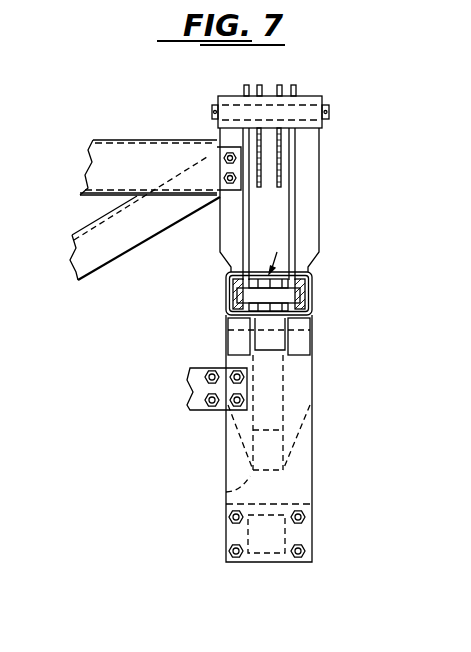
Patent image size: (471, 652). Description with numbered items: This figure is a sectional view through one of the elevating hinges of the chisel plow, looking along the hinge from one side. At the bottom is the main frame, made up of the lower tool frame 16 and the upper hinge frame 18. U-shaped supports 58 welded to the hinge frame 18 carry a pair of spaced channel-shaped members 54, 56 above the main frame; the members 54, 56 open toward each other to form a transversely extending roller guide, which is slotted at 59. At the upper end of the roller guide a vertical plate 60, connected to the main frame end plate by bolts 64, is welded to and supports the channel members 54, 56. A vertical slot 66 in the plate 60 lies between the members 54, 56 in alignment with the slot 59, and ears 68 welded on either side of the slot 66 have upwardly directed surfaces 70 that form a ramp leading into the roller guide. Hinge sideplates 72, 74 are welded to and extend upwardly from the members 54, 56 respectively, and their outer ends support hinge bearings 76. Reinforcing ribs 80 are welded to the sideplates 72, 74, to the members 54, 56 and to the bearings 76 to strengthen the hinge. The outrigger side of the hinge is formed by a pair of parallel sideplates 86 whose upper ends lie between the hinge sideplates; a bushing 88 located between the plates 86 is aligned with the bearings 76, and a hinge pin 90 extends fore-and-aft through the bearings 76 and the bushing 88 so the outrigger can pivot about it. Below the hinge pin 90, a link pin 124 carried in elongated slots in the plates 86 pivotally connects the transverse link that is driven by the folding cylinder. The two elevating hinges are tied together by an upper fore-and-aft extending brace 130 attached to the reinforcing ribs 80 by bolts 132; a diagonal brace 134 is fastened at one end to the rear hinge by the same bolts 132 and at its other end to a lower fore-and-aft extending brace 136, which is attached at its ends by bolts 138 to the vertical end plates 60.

The lower tool frame 16 is at (258, 564).
The upper hinge frame 18 is at (226, 491).
The channel-shaped member 54 is at (312, 273).
The channel-shaped member 56 is at (226, 277).
The U-shaped support 58 is at (228, 440).
The slot 59 is at (280, 254).
The vertical plate 60 is at (295, 478).
The bolt 64 is at (229, 550).
The vertical slot 66 is at (272, 341).
The ear 68 is at (243, 351).
The upwardly directed surface 70 is at (240, 326).
The hinge sideplate 72 is at (296, 226).
The hinge sideplate 74 is at (244, 236).
The hinge bearing 76 is at (230, 96).
The reinforcing rib 80 is at (306, 188).
The sideplate 86 is at (259, 163).
The bushing 88 is at (268, 96).
The hinge pin 90 is at (330, 112).
The link pin 124 is at (290, 296).
The upper fore-and-aft extending brace 130 is at (112, 150).
The bolt 132 is at (222, 158).
The diagonal brace 134 is at (90, 232).
The lower fore-and-aft extending brace 136 is at (190, 378).
The bolt 138 is at (232, 404).